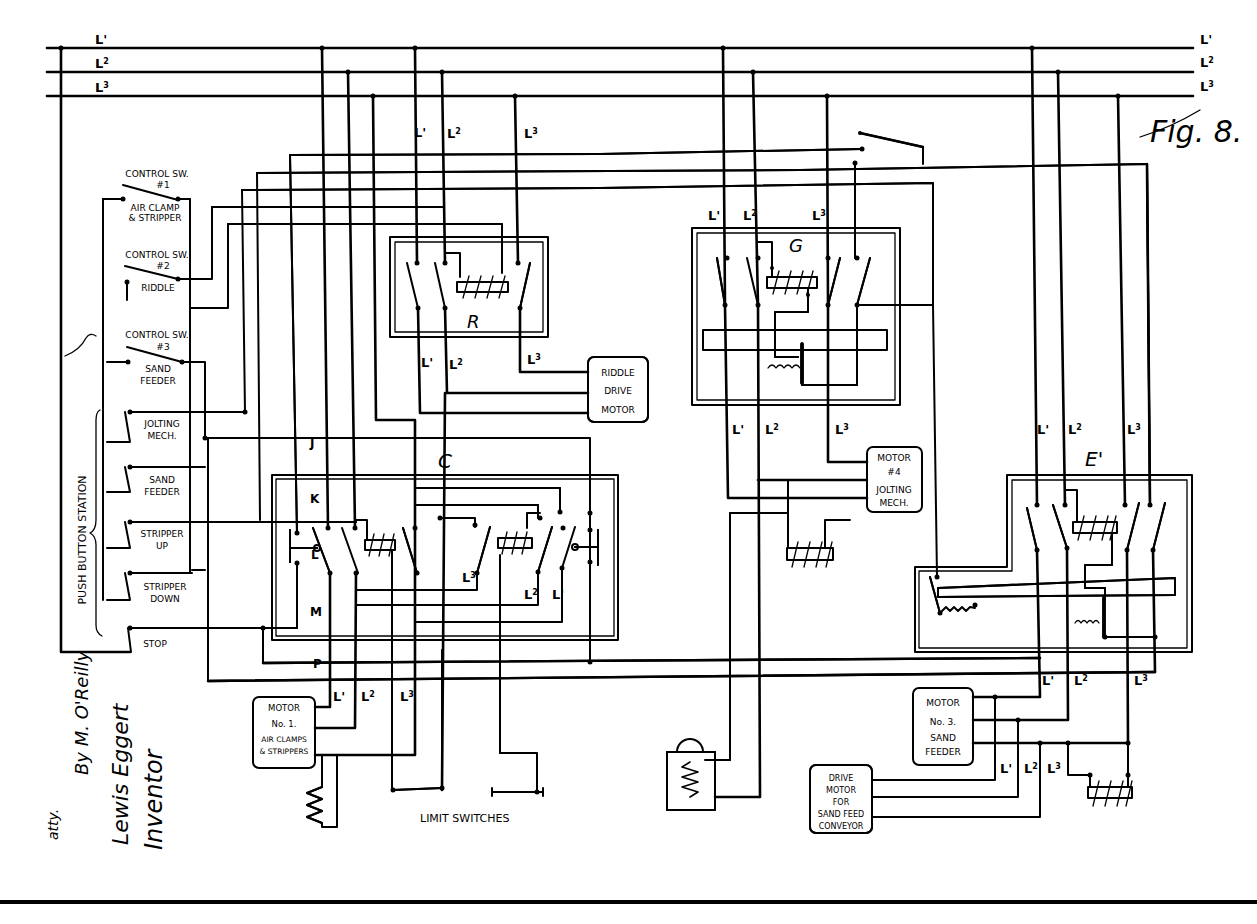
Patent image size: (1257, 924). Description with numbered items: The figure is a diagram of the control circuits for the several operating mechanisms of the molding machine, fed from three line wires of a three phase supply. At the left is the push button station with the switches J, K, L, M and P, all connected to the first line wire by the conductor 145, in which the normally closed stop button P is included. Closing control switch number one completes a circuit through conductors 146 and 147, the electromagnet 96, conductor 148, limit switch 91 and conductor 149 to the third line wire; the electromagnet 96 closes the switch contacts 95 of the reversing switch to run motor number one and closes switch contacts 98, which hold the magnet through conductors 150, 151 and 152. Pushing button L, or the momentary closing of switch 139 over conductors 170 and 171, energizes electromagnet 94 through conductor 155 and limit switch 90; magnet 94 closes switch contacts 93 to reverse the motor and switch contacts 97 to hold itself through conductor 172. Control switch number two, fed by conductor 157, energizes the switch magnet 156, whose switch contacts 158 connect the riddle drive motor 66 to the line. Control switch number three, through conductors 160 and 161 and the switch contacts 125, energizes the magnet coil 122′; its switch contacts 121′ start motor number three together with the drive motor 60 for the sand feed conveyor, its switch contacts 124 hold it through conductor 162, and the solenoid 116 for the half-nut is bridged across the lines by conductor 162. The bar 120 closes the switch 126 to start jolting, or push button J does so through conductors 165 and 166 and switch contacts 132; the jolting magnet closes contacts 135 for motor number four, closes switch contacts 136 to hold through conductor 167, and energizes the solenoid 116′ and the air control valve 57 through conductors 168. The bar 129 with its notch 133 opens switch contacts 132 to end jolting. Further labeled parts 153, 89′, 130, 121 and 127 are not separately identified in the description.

The conductor 145 is at (81, 337).
The conductor 146 is at (195, 332).
The conductor 147 is at (575, 506).
The conductor 148 is at (505, 727).
The conductor 149 is at (447, 727).
The conductor 150 is at (228, 520).
The conductor 151 is at (648, 657).
The conductor 152 is at (595, 596).
The control wire 153 is at (192, 558).
The conductor 155 is at (395, 738).
The switch magnet 156 is at (482, 275).
The conductor 157 is at (455, 201).
The switch contacts 158 is at (532, 286).
The conductor 160 is at (209, 563).
The conductor 161 is at (1140, 637).
The conductor 162 is at (260, 400).
The conductor 165 is at (248, 302).
The conductor 166 is at (910, 308).
The conductor 167 is at (862, 210).
The conductors 168 is at (725, 558).
The conductor 170 is at (293, 350).
The conductor 171 is at (307, 520).
The conductor 172 is at (305, 615).
The switch 139 is at (888, 138).
The contactor G coil 130 is at (795, 276).
The bar 129 is at (742, 352).
The switch contacts 132 is at (810, 362).
The notch 133 is at (790, 340).
The contacts 135 is at (790, 281).
The switch contacts 136 is at (875, 281).
The riddle drive motor 66 is at (627, 356).
The air control valve 57 is at (668, 760).
The drive motor for sand feed conveyor 60 is at (845, 762).
The resistor 89' is at (295, 805).
The limit switch 90 is at (410, 788).
The limit switch 91 is at (520, 790).
The switch contacts 93 is at (350, 558).
The electromagnet 94 is at (380, 537).
The switch contacts 95 is at (473, 562).
The electromagnet 96 is at (513, 535).
The switch contacts 97 is at (288, 541).
The switch contacts 98 is at (605, 535).
The solenoid 116 is at (1136, 804).
The solenoid 116' is at (837, 564).
The bar 120 is at (1005, 597).
The contactor E contacts 121 is at (1146, 526).
The switch contacts 121' is at (1021, 523).
The magnet coil 122' is at (1095, 513).
The switch contacts 124 is at (1160, 540).
The switch contacts 125 is at (1088, 623).
The switch 126 is at (930, 587).
The control wire 127 is at (1087, 580).